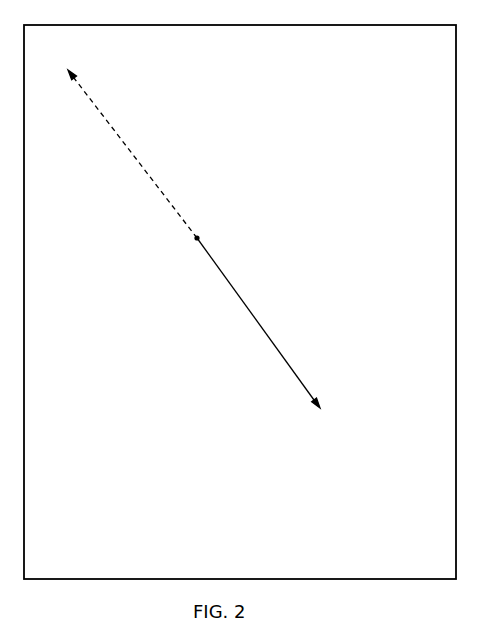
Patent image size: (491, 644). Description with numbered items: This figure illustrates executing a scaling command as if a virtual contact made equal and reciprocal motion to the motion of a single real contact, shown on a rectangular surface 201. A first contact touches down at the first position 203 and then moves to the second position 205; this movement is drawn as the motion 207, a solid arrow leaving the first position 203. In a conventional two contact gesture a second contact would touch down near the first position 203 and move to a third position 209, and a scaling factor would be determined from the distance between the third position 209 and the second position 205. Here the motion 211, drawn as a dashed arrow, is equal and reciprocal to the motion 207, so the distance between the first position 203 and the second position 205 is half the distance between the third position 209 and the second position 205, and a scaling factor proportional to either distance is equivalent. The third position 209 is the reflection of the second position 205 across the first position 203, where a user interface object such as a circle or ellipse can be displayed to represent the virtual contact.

The sensor field of view / image frame 201 is at (24, 426).
The first position 203 is at (200, 238).
The second position 205 is at (324, 408).
The motion 207 is at (272, 336).
The third position 209 is at (72, 74).
The motion 211 is at (135, 157).